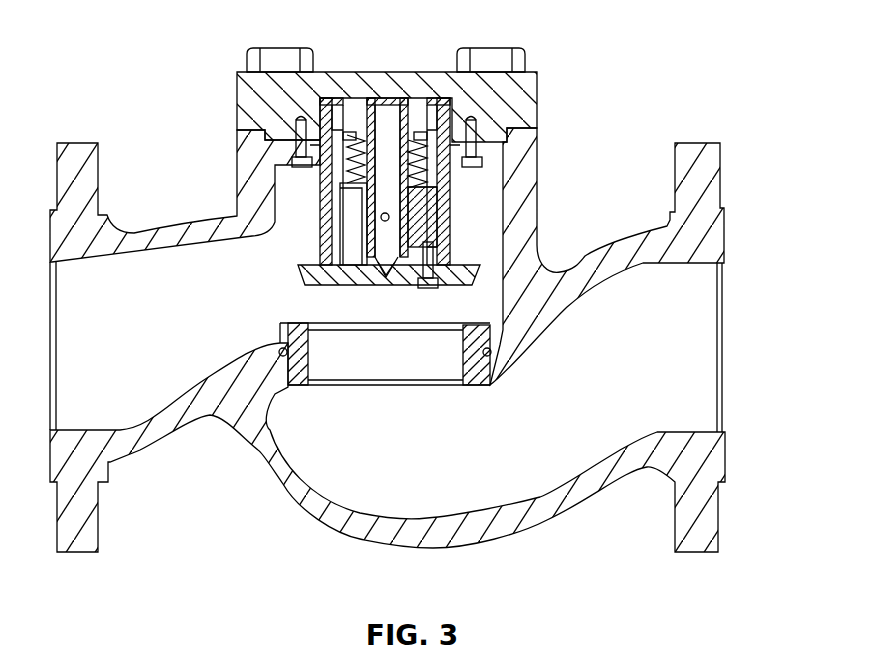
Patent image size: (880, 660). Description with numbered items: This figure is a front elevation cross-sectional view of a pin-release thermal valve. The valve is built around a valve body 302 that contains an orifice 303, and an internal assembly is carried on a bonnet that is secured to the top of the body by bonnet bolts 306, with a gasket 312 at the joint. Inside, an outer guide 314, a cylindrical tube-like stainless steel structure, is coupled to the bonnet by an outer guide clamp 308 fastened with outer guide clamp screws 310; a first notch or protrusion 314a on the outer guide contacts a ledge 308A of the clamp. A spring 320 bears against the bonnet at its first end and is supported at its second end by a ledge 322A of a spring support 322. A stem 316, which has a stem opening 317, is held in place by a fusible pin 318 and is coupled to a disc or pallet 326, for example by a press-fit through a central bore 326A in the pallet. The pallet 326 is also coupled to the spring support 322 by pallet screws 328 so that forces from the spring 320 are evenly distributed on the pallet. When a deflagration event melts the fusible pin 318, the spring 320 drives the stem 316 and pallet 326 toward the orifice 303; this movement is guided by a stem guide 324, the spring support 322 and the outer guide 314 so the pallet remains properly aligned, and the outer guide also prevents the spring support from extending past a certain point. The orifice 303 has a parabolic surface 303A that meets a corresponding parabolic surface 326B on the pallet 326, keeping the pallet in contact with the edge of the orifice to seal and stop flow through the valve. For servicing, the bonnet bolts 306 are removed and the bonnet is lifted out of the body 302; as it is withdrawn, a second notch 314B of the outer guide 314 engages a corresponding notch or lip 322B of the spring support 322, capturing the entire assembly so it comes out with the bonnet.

The valve body 302 is at (537, 72).
The orifice 303 is at (363, 360).
The parabolic surface 303A is at (297, 388).
The bonnet bolts 306 is at (272, 50).
The outer guide clamp 308 is at (487, 148).
The ledge 308A is at (305, 130).
The outer guide clamp screws 310 is at (440, 162).
The gasket 312 is at (320, 160).
The outer guide 314 is at (340, 180).
The first notch or protrusion 314a is at (450, 140).
The second notch 314B is at (362, 195).
The stem 316 is at (340, 250).
The stem opening 317 is at (380, 220).
The fusible pin 318 is at (437, 210).
The spring 320 is at (372, 96).
The spring support 322 is at (300, 243).
The ledge 322A is at (440, 198).
The notch or lip 322B is at (346, 100).
The stem guide 324 is at (350, 215).
The pallet 326 is at (470, 252).
The central bore 326A is at (375, 272).
The parabolic surface 326B is at (435, 275).
The pallet screws 328 is at (452, 230).